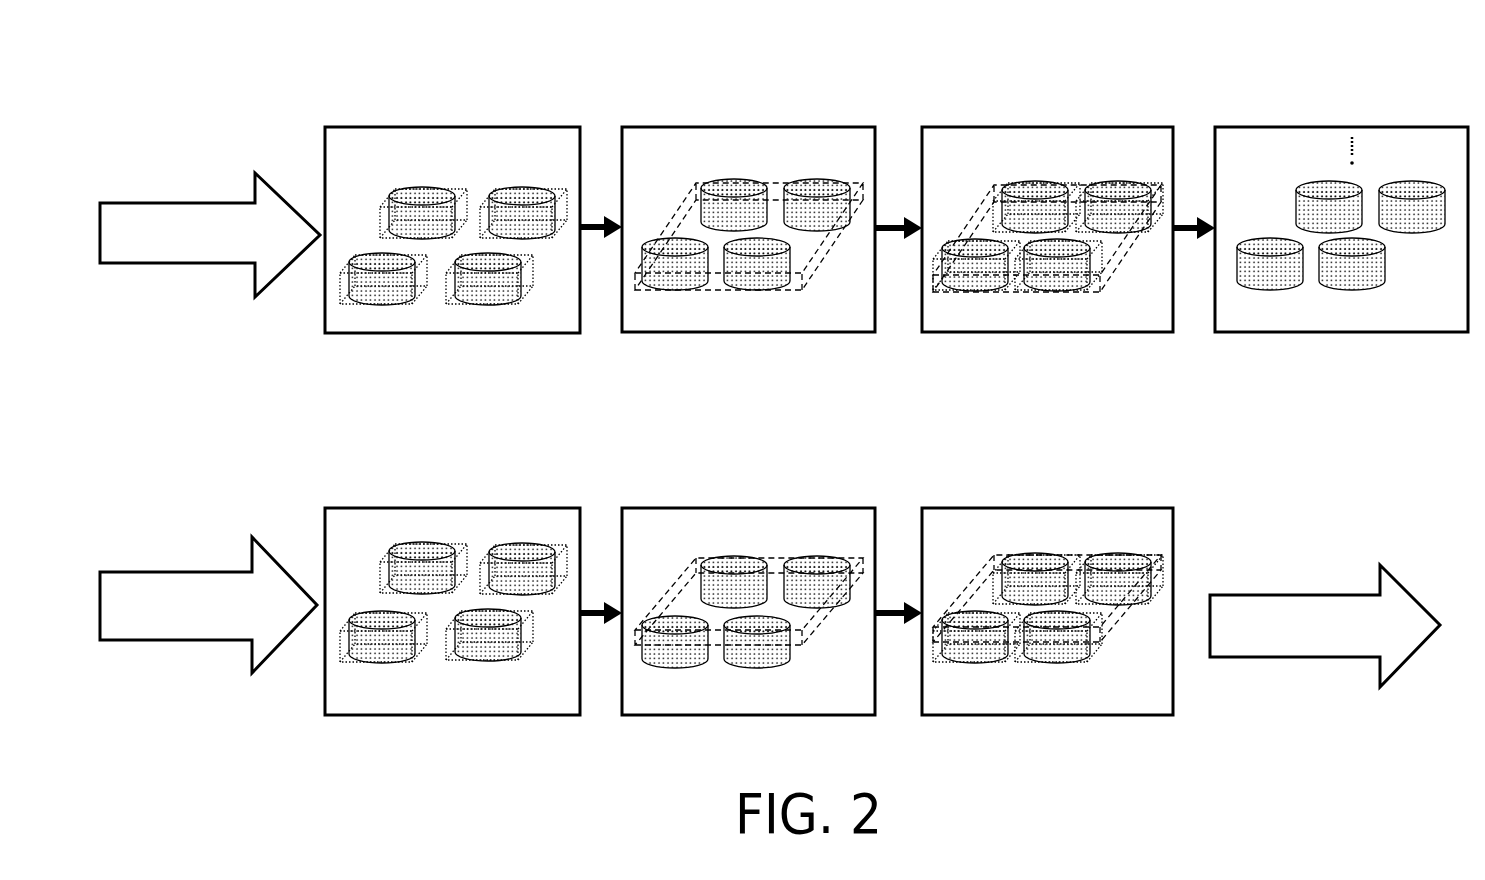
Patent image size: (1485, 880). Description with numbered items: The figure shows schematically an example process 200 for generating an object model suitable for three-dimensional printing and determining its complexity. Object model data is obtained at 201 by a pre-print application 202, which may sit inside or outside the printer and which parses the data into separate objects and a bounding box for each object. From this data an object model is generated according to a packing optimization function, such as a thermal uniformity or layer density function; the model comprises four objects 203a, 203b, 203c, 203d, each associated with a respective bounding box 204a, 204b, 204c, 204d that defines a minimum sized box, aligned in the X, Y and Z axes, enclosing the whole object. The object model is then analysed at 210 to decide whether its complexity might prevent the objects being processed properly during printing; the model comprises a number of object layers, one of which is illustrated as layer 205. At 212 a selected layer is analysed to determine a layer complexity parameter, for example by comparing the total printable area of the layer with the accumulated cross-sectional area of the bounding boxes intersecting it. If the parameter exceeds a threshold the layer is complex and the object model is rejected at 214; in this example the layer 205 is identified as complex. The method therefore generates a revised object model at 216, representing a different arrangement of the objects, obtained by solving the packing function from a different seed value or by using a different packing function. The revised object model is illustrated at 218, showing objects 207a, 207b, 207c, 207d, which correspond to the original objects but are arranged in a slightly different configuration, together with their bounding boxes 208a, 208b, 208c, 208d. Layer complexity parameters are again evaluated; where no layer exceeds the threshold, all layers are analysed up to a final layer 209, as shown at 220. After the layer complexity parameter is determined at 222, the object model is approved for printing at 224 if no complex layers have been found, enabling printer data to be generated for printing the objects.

The process for generating an object model 200 is at (870, 448).
The obtaining object model data 201 is at (190, 203).
The pre-print application 202 is at (325, 323).
The object 203a is at (435, 197).
The object 203b is at (540, 213).
The object 203c is at (382, 293).
The object 203d is at (500, 293).
The bounding box 204a is at (380, 215).
The bounding box 204b is at (533, 187).
The bounding box 204c is at (427, 283).
The bounding box 204d is at (533, 283).
The layer 205 is at (818, 257).
The analysing the object model 210 is at (748, 260).
The determining the layer complexity parameter 212 is at (1048, 332).
The rejecting the object model 214 is at (1342, 332).
The generating a revised object model 216 is at (182, 572).
The revised object model 218 is at (325, 682).
The object 207a is at (433, 572).
The object 207b is at (538, 570).
The object 207c is at (382, 647).
The object 207d is at (485, 647).
The bounding box 208a is at (380, 568).
The bounding box 208b is at (552, 540).
The bounding box 208c is at (402, 663).
The bounding box 208d is at (523, 653).
The final layer 209 is at (810, 623).
The analysing layers of the revised object model 220 is at (748, 638).
The determining the layer complexity parameter of the revised model 222 is at (1048, 715).
The approving the object model 224 is at (1305, 595).